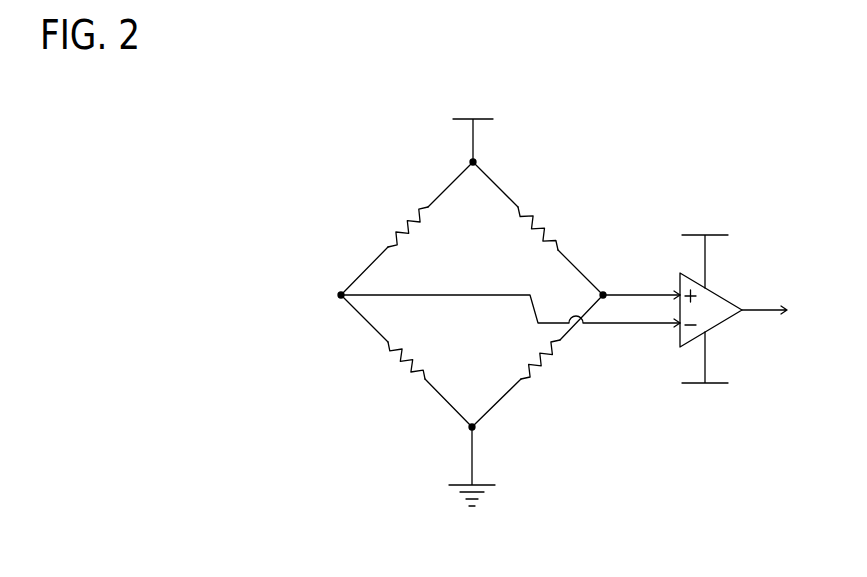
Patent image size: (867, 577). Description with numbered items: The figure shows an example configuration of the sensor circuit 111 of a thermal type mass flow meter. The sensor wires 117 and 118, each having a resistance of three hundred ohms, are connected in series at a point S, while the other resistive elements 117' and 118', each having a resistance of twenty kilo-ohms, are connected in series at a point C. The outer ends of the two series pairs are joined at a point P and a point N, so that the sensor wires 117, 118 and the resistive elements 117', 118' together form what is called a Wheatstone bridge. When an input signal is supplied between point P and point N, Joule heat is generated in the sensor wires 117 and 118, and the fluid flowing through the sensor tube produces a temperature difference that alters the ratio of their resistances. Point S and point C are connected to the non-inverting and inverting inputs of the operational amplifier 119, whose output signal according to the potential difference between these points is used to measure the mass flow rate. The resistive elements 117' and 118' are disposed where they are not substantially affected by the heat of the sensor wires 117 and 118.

The sensor circuit 111 is at (653, 168).
The sensor wire 117 is at (531, 228).
The resistive element 117' is at (407, 228).
The sensor wire 118 is at (530, 361).
The resistive element 118' is at (406, 361).
The operational amplifier 119 is at (729, 301).